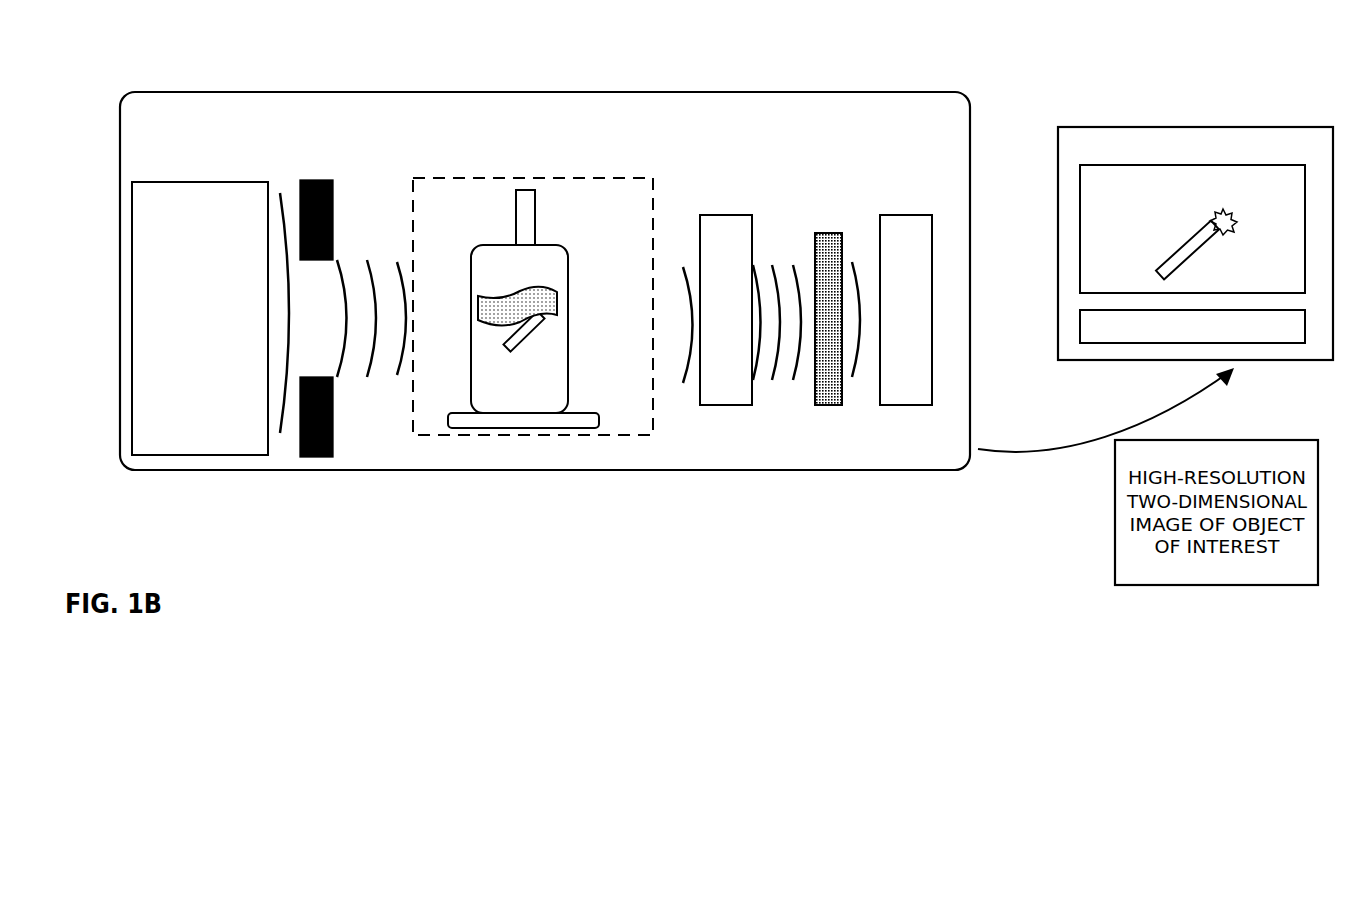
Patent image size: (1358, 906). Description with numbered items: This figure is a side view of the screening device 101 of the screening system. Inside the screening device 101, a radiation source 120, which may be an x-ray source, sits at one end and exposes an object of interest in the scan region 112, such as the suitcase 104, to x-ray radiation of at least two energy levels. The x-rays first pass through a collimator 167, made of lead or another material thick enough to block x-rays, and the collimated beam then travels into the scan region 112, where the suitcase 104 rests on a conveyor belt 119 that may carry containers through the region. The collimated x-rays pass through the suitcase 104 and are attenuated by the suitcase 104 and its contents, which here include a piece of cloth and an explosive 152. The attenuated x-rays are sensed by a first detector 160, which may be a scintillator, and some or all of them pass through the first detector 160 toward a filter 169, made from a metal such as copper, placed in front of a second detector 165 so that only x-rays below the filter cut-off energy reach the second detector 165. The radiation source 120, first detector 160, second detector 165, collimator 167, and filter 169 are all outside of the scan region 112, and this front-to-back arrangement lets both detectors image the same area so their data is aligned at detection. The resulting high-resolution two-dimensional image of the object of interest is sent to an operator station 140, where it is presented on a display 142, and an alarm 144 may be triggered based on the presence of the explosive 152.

The screening device 101 is at (400, 90).
The radiation source 120 is at (200, 318).
The collimator 167 is at (323, 178).
The scan region 112 is at (600, 177).
The suitcase 104 is at (557, 305).
The explosive 152 is at (537, 327).
The conveyor belt 119 is at (563, 422).
The first detector 160 is at (726, 310).
The filter 169 is at (823, 230).
The second detector 165 is at (906, 310).
The operator station 140 is at (1195, 200).
The display 142 is at (1192, 229).
The alarm 144 is at (1192, 326).